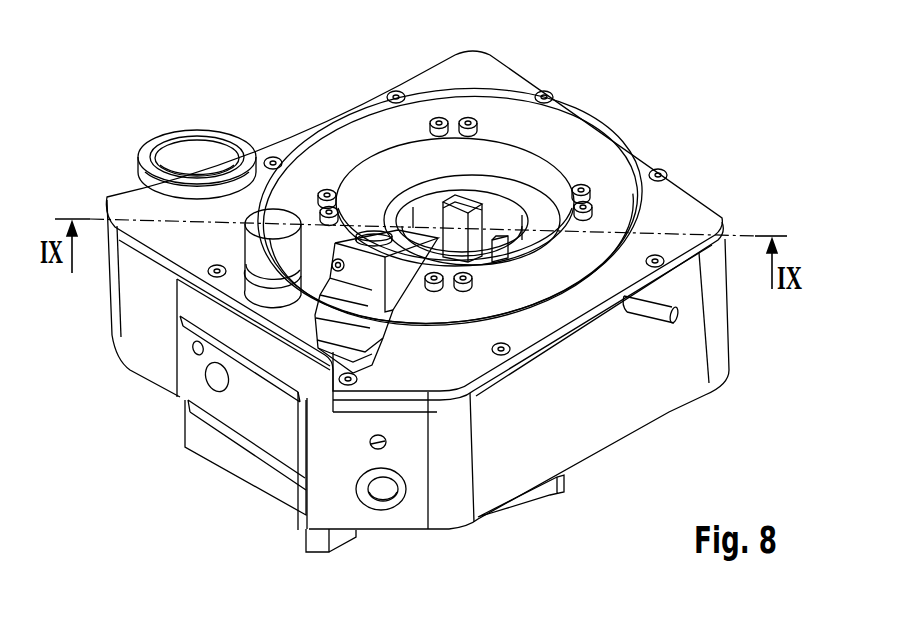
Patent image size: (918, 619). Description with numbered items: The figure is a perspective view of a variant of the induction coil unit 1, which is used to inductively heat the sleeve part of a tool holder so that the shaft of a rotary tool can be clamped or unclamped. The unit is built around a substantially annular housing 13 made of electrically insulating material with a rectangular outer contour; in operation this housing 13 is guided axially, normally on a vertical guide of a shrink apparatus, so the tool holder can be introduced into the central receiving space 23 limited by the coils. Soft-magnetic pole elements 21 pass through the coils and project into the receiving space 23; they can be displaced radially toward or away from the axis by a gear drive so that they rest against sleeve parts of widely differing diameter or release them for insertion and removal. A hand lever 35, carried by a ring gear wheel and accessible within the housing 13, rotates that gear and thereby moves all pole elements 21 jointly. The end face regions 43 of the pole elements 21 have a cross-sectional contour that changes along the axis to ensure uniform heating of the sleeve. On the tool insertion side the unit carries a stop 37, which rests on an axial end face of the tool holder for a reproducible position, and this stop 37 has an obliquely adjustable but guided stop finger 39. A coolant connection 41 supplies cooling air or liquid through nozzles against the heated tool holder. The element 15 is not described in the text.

The induction coil unit 1 is at (664, 94).
The housing 13 is at (597, 430).
The drive unit box 15 is at (263, 405).
The pole element 21 is at (449, 202).
The receiving space 23 is at (503, 226).
The hand lever 35 is at (654, 322).
The stop 37 is at (371, 216).
The stop finger 39 is at (360, 262).
The coolant connection 41 is at (210, 150).
The end face regions 43 is at (494, 218).